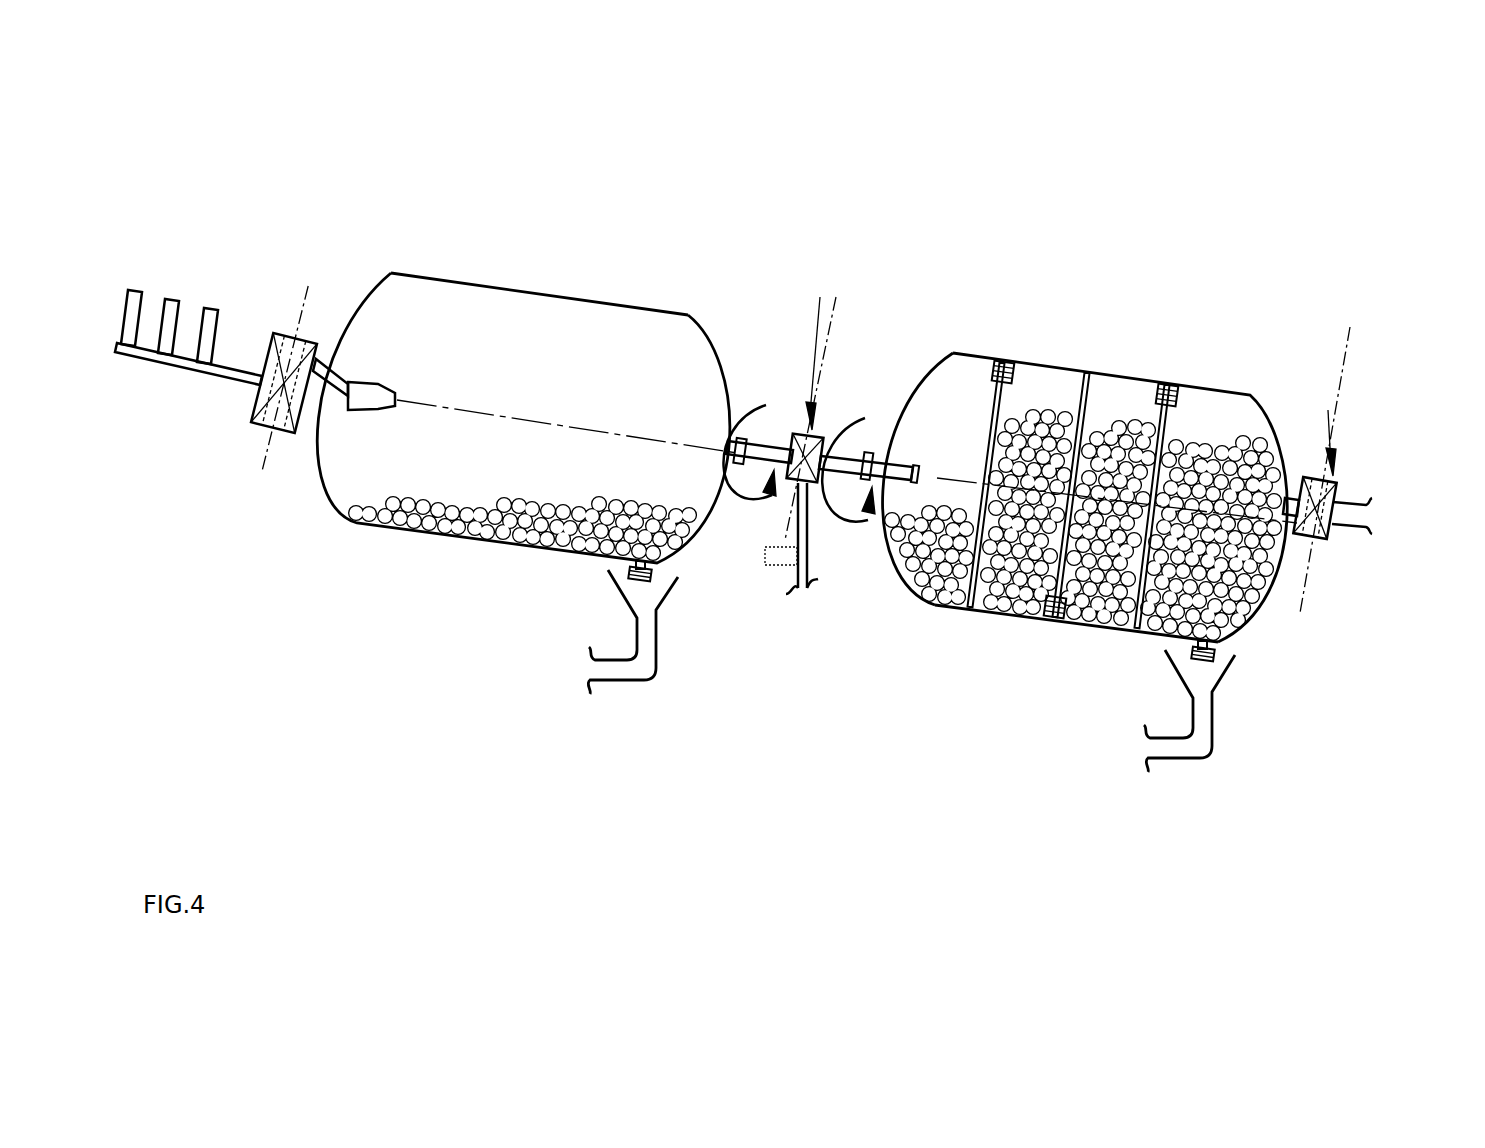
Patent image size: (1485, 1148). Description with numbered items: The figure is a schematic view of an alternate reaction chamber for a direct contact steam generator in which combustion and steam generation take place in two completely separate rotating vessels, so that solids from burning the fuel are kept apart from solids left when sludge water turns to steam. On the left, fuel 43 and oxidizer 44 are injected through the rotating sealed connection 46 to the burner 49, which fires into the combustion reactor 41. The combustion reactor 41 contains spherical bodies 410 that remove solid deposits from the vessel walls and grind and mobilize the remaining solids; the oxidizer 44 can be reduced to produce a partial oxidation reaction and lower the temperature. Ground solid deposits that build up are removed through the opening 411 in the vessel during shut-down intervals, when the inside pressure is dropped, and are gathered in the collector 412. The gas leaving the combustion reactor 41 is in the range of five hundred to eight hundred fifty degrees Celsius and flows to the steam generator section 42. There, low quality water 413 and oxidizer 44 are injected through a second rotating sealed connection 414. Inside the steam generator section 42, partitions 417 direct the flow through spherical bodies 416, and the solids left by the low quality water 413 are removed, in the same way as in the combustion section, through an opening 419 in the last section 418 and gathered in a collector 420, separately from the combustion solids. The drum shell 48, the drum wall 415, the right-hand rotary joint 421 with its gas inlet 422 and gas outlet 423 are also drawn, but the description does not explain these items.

The combustion reactor 41 is at (426, 312).
The steam generator section 42 is at (973, 353).
The fuel 43 is at (145, 243).
The oxidizer 44 is at (225, 264).
The rotating sealed connection 46 is at (297, 337).
The drum shell 48 is at (481, 283).
The burner 49 is at (360, 412).
The spherical bodies 410 is at (483, 530).
The opening 411 is at (647, 581).
The collector 412 is at (645, 627).
The low quality water 413 is at (803, 625).
The rotating sealed connection 414 is at (823, 323).
The drum wall 415 is at (925, 600).
The spherical bodies 416 is at (958, 603).
The partitions 417 is at (1005, 362).
The last section 418 is at (1242, 437).
The opening 419 is at (1212, 658).
The collector 420 is at (1195, 747).
The rotary joint 421 is at (1310, 477).
The gas inlet 422 is at (1337, 477).
The gas outlet 423 is at (1414, 513).